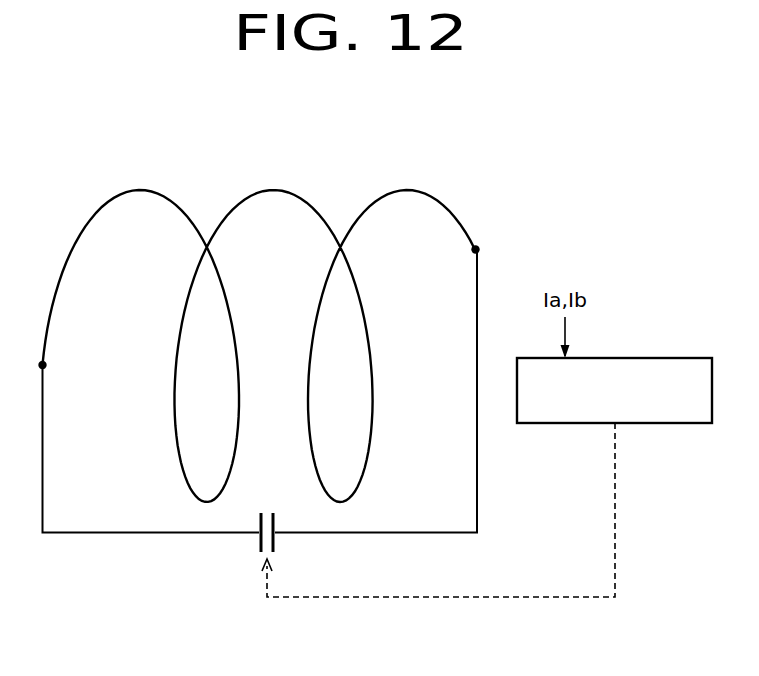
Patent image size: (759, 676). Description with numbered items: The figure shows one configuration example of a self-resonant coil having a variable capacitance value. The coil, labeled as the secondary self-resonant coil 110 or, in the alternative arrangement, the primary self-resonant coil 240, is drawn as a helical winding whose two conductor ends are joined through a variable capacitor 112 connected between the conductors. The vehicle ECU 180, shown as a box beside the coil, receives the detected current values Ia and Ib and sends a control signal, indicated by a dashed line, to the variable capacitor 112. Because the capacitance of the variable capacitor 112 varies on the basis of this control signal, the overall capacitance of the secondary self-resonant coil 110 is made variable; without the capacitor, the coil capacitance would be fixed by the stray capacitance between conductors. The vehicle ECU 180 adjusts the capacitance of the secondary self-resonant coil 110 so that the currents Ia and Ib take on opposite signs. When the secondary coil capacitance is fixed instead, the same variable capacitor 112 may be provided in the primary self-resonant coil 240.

The secondary self-resonant coil 110 is at (153, 143).
The primary self-resonant coil 240 is at (259, 346).
The variable capacitor 112 is at (261, 523).
The vehicle ECU 180 is at (690, 356).